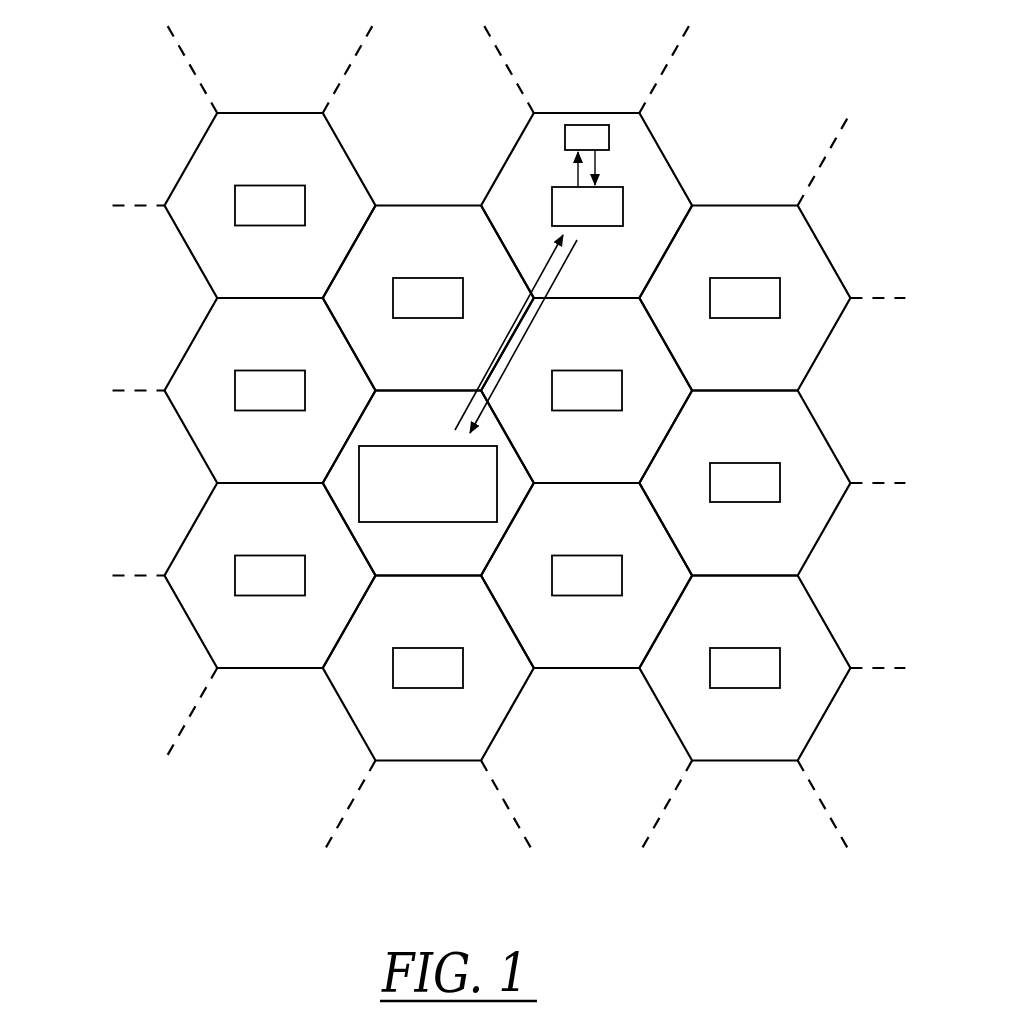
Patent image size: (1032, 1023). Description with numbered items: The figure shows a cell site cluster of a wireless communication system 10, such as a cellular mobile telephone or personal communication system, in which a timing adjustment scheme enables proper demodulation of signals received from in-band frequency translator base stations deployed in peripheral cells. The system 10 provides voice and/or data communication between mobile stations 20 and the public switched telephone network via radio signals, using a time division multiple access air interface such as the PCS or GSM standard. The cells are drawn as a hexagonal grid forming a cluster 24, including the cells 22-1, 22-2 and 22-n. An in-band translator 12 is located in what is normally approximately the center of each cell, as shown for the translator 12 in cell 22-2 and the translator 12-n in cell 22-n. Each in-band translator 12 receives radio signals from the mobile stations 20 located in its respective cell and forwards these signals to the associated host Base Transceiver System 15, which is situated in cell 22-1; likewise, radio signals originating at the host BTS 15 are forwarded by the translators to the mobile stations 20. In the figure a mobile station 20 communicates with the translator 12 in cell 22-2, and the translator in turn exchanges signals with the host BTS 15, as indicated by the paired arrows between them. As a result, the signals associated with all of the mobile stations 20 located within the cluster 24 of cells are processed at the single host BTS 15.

The wireless communication system 10 is at (148, 110).
The mobile station 20 is at (579, 124).
The in-band translator 12 is at (595, 226).
The cell 22-2 is at (677, 218).
The cell 22-1 is at (425, 432).
The cell 22-n is at (760, 432).
The in-band translator 12-n is at (765, 502).
The host Base Transceiver System 15 is at (415, 522).
The cluster of cells 24 is at (838, 226).